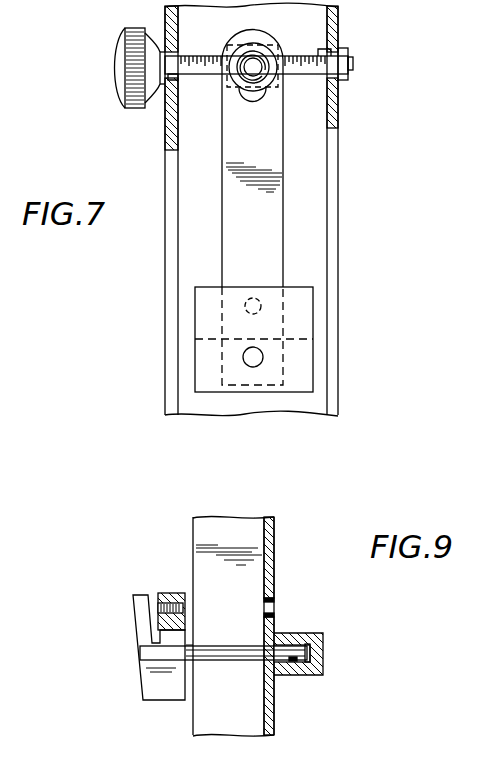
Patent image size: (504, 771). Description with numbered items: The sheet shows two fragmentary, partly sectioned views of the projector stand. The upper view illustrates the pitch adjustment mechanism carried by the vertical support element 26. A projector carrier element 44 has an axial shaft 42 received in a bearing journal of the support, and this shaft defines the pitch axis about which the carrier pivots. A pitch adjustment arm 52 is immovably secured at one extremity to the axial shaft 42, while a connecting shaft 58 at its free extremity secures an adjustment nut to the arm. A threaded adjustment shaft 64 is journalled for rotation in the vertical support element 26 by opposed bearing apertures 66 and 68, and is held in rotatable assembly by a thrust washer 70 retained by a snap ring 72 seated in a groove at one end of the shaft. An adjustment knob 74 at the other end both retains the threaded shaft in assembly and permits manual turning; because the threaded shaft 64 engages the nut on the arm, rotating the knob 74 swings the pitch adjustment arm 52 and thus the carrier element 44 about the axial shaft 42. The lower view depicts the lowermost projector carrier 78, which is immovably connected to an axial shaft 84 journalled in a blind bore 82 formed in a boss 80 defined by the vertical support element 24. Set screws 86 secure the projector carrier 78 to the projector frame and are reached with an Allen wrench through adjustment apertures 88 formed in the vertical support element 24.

In FIG. 9, the vertical support element 24 is at (275, 718).
In FIG. 7, the vertical support element 26 is at (167, 256).
In FIG. 7, the axial shaft 42 is at (264, 360).
In FIG. 7, the projector carrier element 44 is at (306, 300).
In FIG. 7, the pitch adjustment arm 52 is at (272, 157).
In FIG. 7, the connecting shaft 58 is at (256, 65).
In FIG. 7, the threaded adjustment shaft 64 is at (202, 57).
In FIG. 7, the bearing aperture 66 is at (178, 76).
In FIG. 7, the bearing aperture 68 is at (322, 53).
In FIG. 7, the thrust washer 70 is at (348, 51).
In FIG. 7, the snap ring 72 is at (351, 75).
In FIG. 7, the adjustment knob 74 is at (115, 88).
In FIG. 9, the projector carrier 78 is at (147, 677).
In FIG. 9, the boss 80 is at (313, 633).
In FIG. 9, the blind bore 82 is at (297, 663).
In FIG. 9, the axial shaft 84 is at (229, 645).
In FIG. 9, the set screws 86 is at (172, 594).
In FIG. 9, the adjustment apertures 88 is at (278, 607).